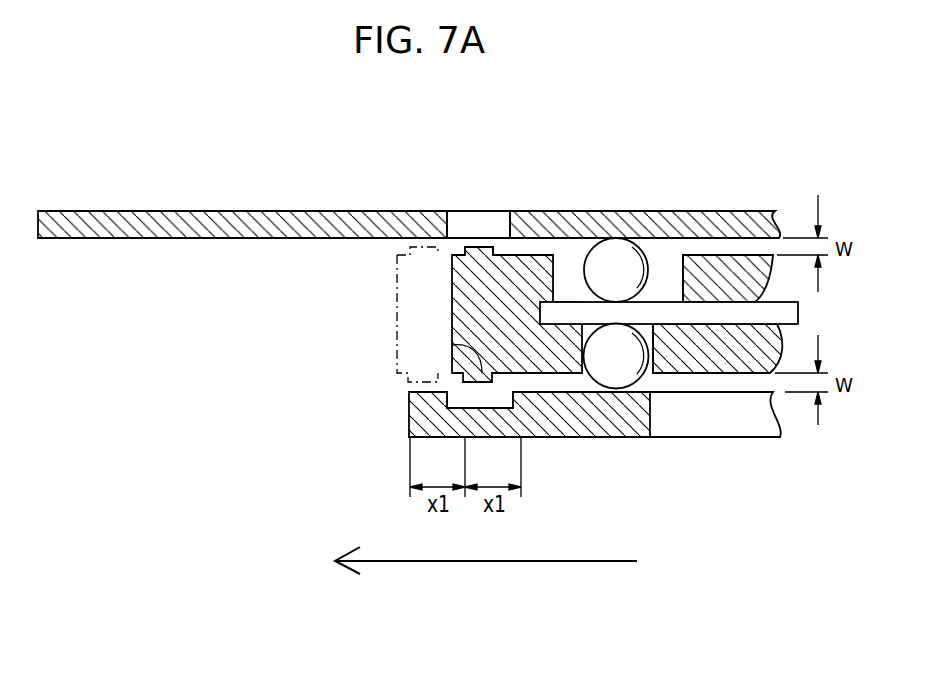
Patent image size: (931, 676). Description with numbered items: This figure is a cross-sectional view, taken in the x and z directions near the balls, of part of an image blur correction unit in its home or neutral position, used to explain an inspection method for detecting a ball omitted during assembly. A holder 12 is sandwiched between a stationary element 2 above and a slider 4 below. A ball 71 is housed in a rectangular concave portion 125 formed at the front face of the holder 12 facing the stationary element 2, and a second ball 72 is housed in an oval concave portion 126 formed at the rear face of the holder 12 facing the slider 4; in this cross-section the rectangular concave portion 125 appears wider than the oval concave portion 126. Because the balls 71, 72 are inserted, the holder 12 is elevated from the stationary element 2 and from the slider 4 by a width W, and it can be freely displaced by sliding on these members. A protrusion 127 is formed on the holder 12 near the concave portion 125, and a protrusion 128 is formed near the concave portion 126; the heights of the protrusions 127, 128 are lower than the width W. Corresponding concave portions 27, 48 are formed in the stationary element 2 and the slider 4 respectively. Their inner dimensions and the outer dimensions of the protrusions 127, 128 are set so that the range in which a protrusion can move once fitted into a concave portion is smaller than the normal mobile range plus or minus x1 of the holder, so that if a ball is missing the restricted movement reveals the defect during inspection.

The stationary element 2 is at (120, 211).
The slider 4 is at (587, 410).
The holder 12 is at (720, 276).
The concave portion 27 is at (460, 211).
The concave portion 48 is at (521, 397).
The ball 71 is at (617, 267).
The ball 72 is at (618, 360).
The concave portion 125 is at (683, 281).
The concave portion 126 is at (634, 365).
The protrusion 127 is at (482, 247).
The protrusion 128 is at (452, 344).